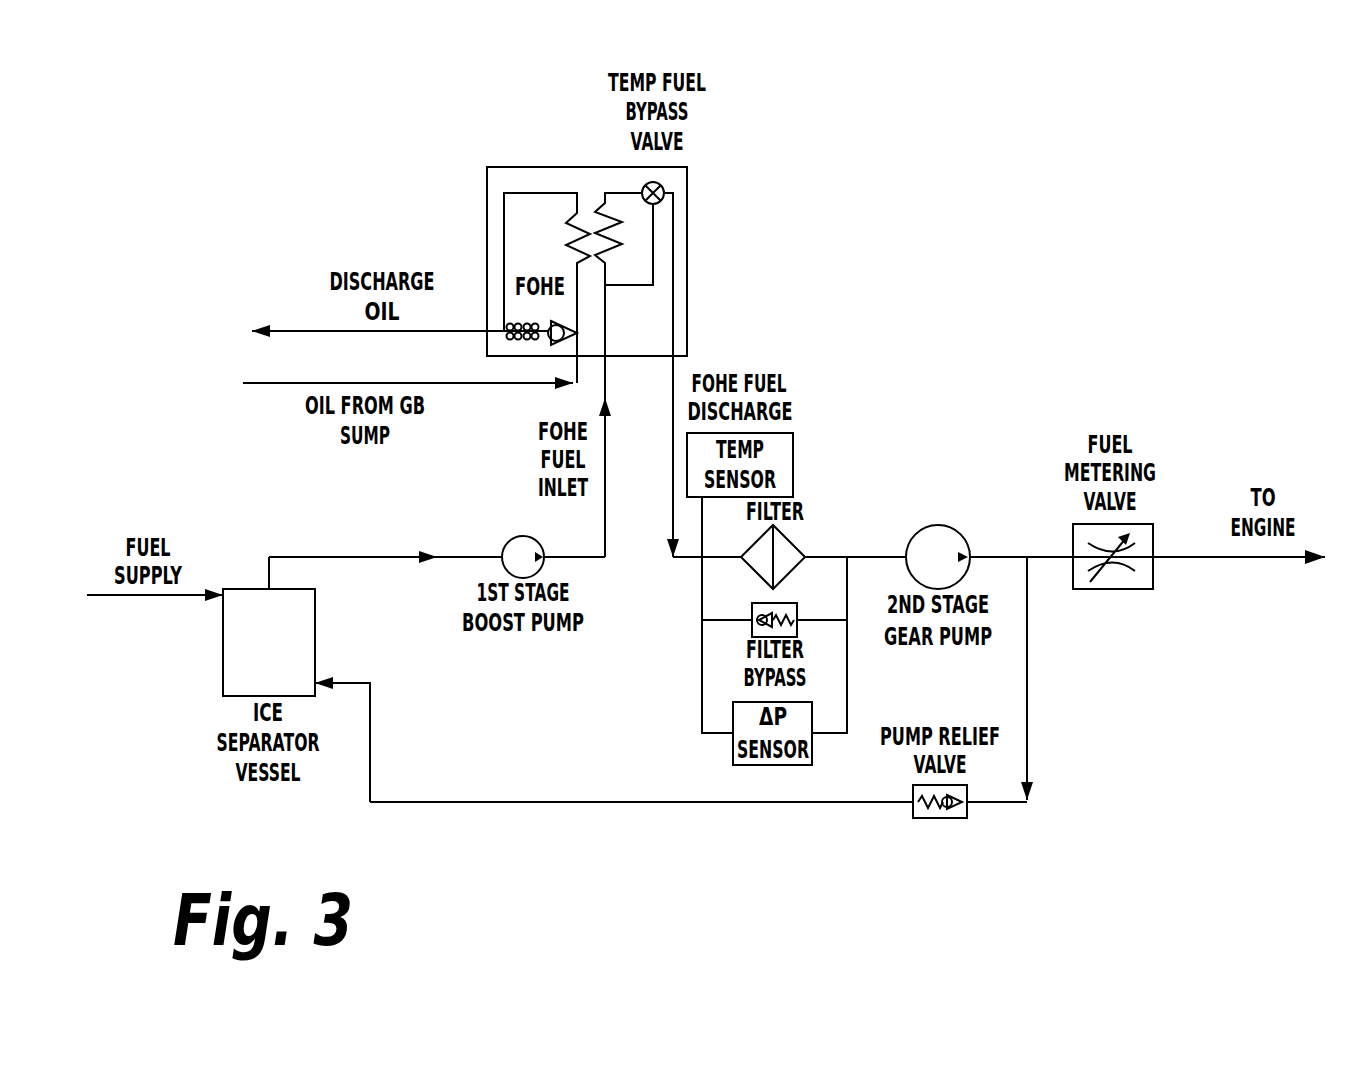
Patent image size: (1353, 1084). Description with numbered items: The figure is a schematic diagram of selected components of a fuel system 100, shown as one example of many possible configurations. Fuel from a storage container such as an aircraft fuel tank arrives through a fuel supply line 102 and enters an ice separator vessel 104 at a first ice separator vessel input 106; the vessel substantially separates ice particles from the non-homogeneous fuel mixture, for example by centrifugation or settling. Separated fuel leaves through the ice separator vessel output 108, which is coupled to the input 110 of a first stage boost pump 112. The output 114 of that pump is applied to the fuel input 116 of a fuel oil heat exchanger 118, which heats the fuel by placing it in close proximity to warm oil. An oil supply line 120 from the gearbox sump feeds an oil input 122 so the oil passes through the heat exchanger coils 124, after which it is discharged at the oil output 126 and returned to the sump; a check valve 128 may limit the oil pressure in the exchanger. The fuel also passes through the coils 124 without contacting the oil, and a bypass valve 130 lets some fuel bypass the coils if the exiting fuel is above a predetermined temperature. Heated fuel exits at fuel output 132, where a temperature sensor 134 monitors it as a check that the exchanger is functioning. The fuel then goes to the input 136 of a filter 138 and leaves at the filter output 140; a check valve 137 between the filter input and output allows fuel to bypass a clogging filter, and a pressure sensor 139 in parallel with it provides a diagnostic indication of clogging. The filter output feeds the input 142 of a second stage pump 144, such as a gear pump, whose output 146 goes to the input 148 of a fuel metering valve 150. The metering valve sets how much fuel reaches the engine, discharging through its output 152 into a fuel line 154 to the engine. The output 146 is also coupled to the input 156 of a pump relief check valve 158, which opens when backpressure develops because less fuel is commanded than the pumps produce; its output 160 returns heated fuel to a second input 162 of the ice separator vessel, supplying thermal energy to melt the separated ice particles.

The fuel system 100 is at (1050, 128).
The fuel supply line 102 is at (102, 597).
The ice separator vessel 104 is at (223, 682).
The first ice separator vessel input 106 is at (223, 597).
The ice separator vessel output 108 is at (268, 589).
The input of first stage boost pump 110 is at (502, 553).
The first stage boost pump 112 is at (518, 537).
The output of first stage pump 114 is at (545, 558).
The fuel input of fuel oil heat exchanger 116 is at (607, 368).
The fuel oil heat exchanger 118 is at (518, 167).
The oil supply line 120 is at (265, 383).
The oil input 122 is at (572, 357).
The heat exchanger coils 124 is at (590, 187).
The fuel oil heat exchanger oil output 126 is at (487, 330).
The check valve 128 is at (560, 324).
The bypass valve 130 is at (664, 183).
The fuel output 132 is at (676, 363).
The temperature sensor 134 is at (793, 463).
The filter input 136 is at (743, 557).
The filter 138 is at (790, 535).
The filter output 140 is at (807, 552).
The check valve 137 is at (797, 630).
The pressure sensor 139 is at (733, 747).
The input of second stage pump 142 is at (905, 553).
The second stage pump 144 is at (943, 527).
The output of second stage pump 146 is at (972, 553).
The input of fuel metering valve 148 is at (1067, 560).
The fuel metering valve 150 is at (1110, 590).
The output of fuel metering valve 152 is at (1153, 558).
The fuel line 154 is at (1280, 558).
The input of pump relief check valve 156 is at (967, 805).
The pump relief check valve 158 is at (938, 820).
The output of pump relief check valve 160 is at (913, 805).
The second input of ice separator vessel 162 is at (317, 683).